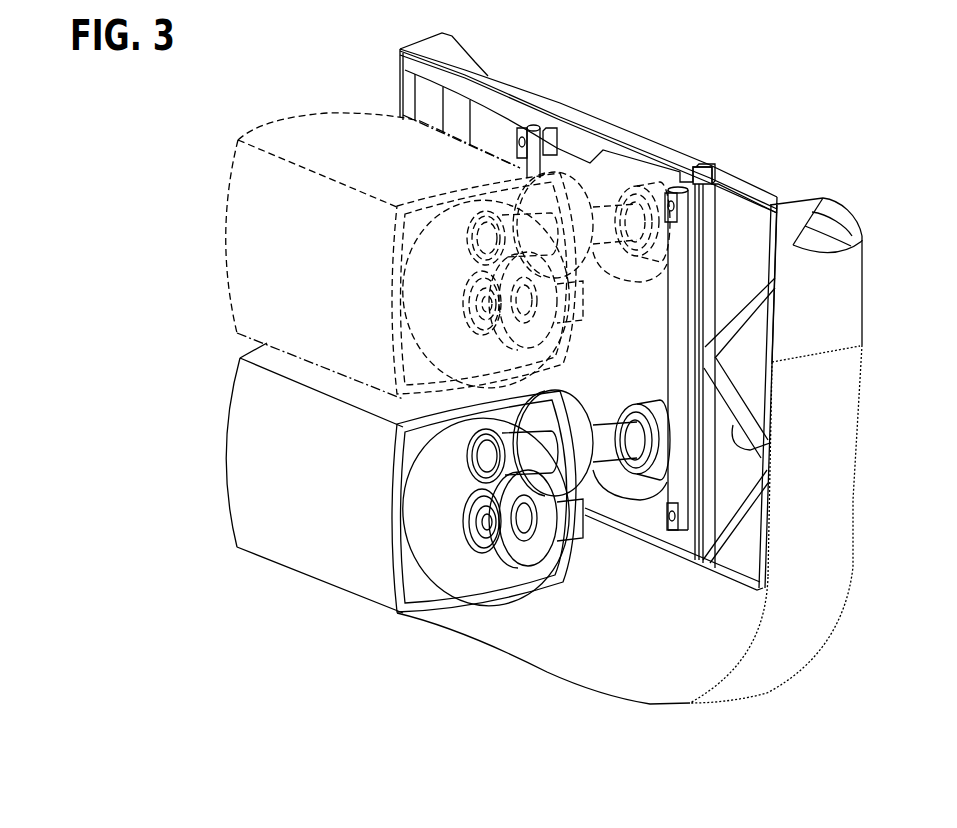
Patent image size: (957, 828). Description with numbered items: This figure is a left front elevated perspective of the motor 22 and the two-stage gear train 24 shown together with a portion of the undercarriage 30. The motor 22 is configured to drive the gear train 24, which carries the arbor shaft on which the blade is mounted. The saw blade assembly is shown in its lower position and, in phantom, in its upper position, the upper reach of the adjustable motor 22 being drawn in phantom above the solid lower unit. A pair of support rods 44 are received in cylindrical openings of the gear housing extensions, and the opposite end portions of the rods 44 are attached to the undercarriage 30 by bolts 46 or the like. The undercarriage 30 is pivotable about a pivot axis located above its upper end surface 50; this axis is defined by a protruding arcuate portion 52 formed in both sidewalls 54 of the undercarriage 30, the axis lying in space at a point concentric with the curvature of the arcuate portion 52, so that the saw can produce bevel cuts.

The motor 22 is at (248, 242).
The gear train 24 is at (491, 567).
The undercarriage 30 is at (750, 447).
The support rods 44 is at (553, 128).
The bolts 46 is at (532, 128).
The upper end surface 50 is at (412, 34).
The arcuate portion 52 is at (864, 237).
The sidewalls 54 is at (840, 287).